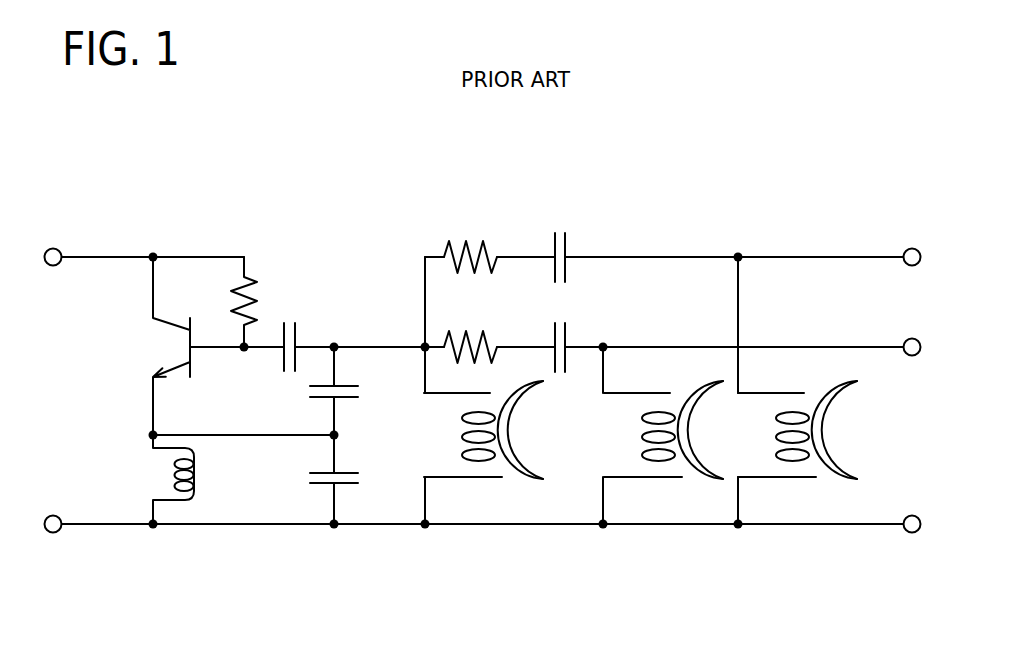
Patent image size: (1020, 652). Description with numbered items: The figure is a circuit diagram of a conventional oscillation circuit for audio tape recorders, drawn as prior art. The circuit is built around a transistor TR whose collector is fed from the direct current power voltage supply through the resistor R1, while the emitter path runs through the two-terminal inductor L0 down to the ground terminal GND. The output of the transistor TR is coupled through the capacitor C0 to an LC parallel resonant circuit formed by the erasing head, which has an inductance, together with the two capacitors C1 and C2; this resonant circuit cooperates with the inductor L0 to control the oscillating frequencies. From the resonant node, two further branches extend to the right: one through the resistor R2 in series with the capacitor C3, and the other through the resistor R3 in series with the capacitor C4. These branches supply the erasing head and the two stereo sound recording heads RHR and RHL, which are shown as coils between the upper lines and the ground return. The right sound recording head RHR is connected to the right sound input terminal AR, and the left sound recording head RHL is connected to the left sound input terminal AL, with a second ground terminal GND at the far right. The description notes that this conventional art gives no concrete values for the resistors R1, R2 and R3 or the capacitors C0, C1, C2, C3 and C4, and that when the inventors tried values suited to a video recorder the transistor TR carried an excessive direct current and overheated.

The ground terminal GND is at (480, 522).
The left sound input terminal AL is at (910, 240).
The right sound input terminal AR is at (910, 330).
The transistor TR is at (153, 346).
The resistor R1 is at (225, 302).
The resistor R2 is at (470, 242).
The resistor R3 is at (470, 332).
The capacitor C0 is at (292, 328).
The capacitor C1 is at (317, 476).
The capacitor C2 is at (342, 410).
The capacitor C3 is at (584, 247).
The capacitor C4 is at (584, 337).
The 2-terminal inductor L0 is at (163, 479).
The right sound recording head RHR is at (663, 452).
The left sound recording head RHL is at (797, 452).